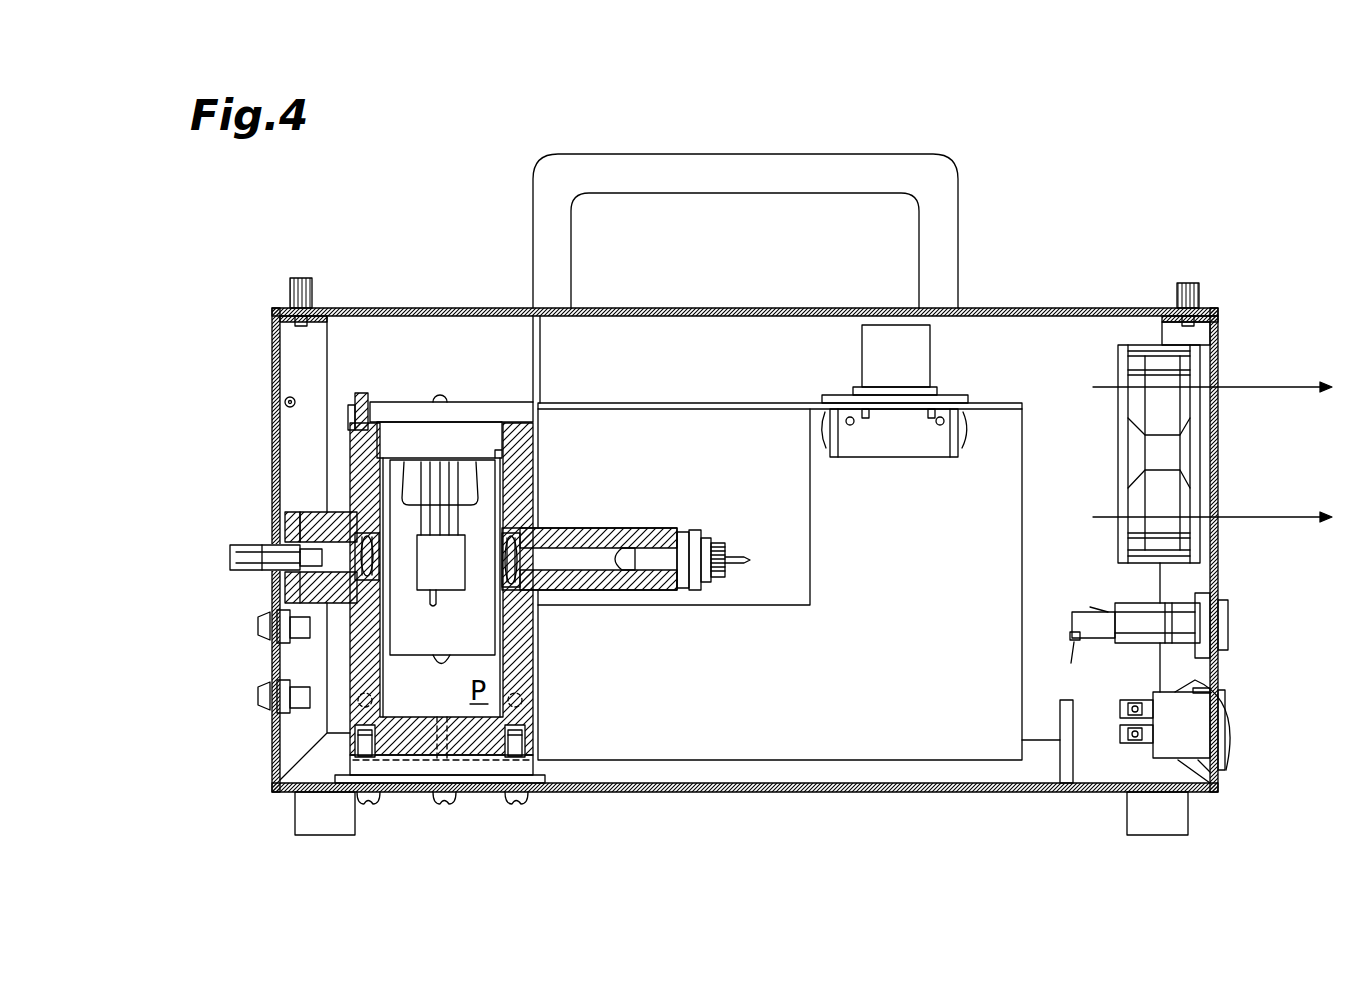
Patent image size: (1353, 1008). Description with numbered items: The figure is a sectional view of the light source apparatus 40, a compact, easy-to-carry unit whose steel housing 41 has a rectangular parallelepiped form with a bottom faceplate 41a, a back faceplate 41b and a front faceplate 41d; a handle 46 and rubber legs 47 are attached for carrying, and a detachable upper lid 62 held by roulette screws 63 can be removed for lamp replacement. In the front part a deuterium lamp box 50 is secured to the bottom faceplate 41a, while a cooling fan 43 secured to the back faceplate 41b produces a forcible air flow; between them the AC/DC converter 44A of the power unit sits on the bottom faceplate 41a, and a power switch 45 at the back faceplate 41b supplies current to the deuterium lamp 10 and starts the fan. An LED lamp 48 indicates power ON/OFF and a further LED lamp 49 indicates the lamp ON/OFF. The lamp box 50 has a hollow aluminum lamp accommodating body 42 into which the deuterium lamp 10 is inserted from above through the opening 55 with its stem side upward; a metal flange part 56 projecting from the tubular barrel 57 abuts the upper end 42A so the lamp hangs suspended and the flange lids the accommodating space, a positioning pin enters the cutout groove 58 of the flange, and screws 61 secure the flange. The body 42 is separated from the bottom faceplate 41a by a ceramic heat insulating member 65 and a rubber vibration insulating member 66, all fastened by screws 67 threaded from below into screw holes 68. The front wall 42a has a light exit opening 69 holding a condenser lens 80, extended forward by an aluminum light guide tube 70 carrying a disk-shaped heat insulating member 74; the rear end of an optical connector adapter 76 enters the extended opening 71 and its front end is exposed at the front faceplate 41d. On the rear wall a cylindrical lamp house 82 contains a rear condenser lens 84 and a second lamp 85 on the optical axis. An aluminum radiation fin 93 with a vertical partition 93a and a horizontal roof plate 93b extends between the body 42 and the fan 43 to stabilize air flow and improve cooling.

The deuterium lamp 10 is at (476, 411).
The light source apparatus 40 is at (1152, 198).
The housing 41 is at (1224, 566).
The bottom faceplate 41a is at (741, 794).
The back faceplate 41b is at (1218, 330).
The front faceplate 41d is at (272, 352).
The lamp accommodating body 42 is at (528, 440).
The upper end 42A is at (521, 417).
The front wall 42a is at (352, 707).
The cooling fan 43 is at (1177, 408).
The AC/DC converter 44A is at (636, 735).
The power switch 45 is at (1227, 703).
The handle 46 is at (899, 157).
The legs 47 is at (295, 822).
The LED lamp 48 is at (258, 626).
The LED lamp 49 is at (258, 692).
The deuterium lamp box 50 is at (565, 449).
The opening 55 is at (378, 446).
The flange part 56 is at (462, 402).
The tubular barrel 57 is at (362, 393).
The cutout groove 58 is at (348, 413).
The screws 61 is at (440, 395).
The upper lid 62 is at (760, 308).
The roulette screws 63 is at (312, 292).
The heat insulating member 65 is at (418, 774).
The vibration insulating member 66 is at (475, 783).
The screws 67 is at (370, 804).
The screw hole 68 is at (525, 748).
The light exit opening 69 is at (385, 568).
The light guide tube 70 is at (300, 512).
The extended opening 71 is at (378, 566).
The heat insulating member 74 is at (290, 512).
The adapter 76 is at (250, 545).
The condenser lens 80 is at (365, 537).
The lamp house 82 is at (612, 530).
The condenser lens 84 is at (512, 586).
The second lamp 85 is at (624, 568).
The radiation fin 93 is at (1028, 437).
The partition 93a is at (1015, 572).
The roof plate 93b is at (792, 403).